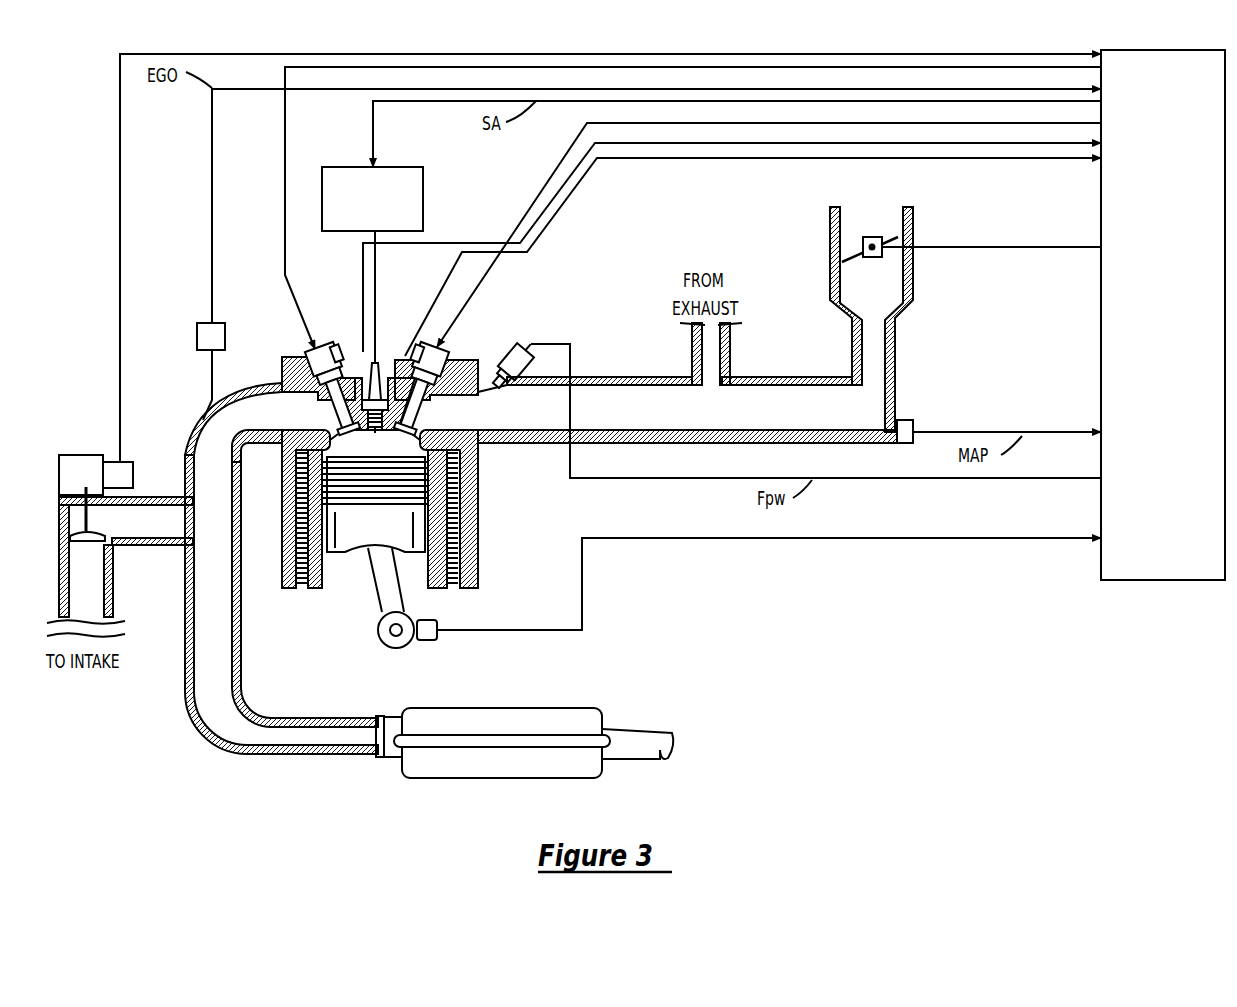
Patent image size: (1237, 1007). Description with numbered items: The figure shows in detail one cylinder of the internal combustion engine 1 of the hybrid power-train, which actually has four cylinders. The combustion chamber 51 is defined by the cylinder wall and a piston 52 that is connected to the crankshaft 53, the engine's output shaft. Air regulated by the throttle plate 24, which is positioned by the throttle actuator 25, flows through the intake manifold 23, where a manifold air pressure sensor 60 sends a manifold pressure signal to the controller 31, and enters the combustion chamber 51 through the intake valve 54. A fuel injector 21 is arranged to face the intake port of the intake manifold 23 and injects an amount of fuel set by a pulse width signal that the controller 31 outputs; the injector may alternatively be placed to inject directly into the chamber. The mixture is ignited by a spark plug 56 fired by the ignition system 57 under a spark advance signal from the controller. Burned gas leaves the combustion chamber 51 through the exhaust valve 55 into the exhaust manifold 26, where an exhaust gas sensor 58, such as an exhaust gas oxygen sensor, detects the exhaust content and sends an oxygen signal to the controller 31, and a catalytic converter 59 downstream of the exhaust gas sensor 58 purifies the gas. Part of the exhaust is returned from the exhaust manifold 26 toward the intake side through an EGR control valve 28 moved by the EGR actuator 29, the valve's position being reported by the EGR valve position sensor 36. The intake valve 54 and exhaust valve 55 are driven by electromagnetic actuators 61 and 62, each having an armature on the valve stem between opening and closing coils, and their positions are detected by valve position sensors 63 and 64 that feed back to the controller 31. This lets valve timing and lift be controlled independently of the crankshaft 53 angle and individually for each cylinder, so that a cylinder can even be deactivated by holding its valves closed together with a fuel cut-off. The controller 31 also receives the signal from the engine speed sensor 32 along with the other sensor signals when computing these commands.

The internal combustion engine 1 is at (280, 351).
The fuel injector 21 is at (505, 345).
The intake manifold 23 is at (745, 419).
The throttle plate 24 is at (854, 268).
The throttle actuator 25 is at (874, 233).
The exhaust manifold 26 is at (212, 453).
The EGR control valve 28 is at (62, 550).
The EGR actuator 29 is at (90, 490).
The controller 31 is at (1100, 292).
The engine speed sensor 32 is at (427, 646).
The EGR valve position sensor 36 is at (127, 489).
The combustion chamber 51 is at (371, 453).
The piston 52 is at (361, 530).
The crankshaft 53 is at (380, 643).
The intake valve 54 is at (418, 420).
The exhaust valve 55 is at (333, 428).
The spark plug 56 is at (379, 360).
The ignition system 57 is at (424, 188).
The exhaust gas sensor 58 is at (200, 321).
The catalytic converter 59 is at (466, 779).
The manifold air pressure sensor 60 is at (905, 420).
The electromagnetic actuator 61 is at (448, 354).
The electromagnetic actuator 62 is at (323, 345).
The valve position sensor 63 is at (406, 338).
The valve position sensor 64 is at (346, 346).